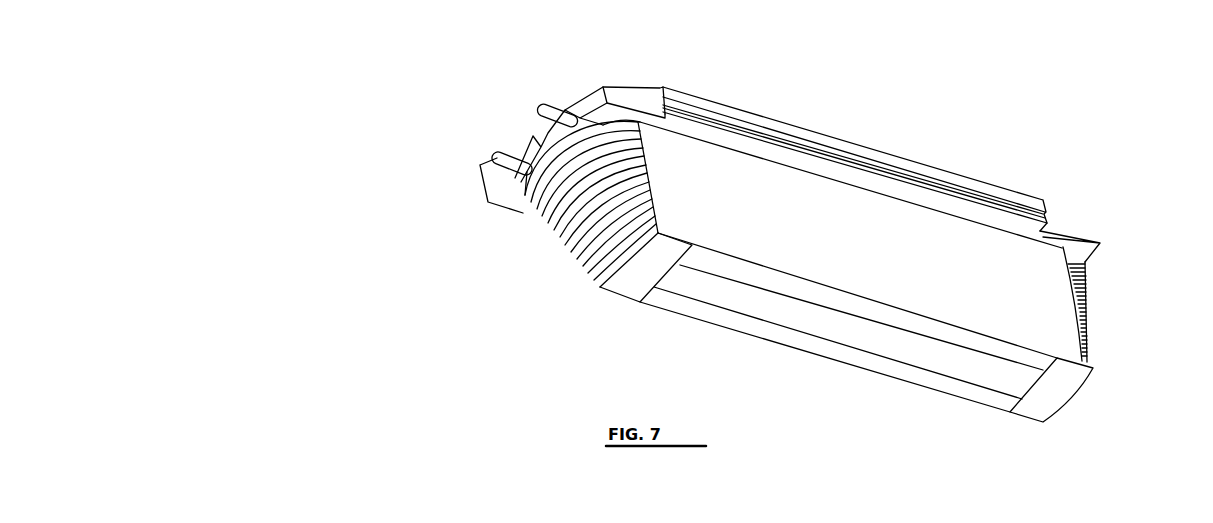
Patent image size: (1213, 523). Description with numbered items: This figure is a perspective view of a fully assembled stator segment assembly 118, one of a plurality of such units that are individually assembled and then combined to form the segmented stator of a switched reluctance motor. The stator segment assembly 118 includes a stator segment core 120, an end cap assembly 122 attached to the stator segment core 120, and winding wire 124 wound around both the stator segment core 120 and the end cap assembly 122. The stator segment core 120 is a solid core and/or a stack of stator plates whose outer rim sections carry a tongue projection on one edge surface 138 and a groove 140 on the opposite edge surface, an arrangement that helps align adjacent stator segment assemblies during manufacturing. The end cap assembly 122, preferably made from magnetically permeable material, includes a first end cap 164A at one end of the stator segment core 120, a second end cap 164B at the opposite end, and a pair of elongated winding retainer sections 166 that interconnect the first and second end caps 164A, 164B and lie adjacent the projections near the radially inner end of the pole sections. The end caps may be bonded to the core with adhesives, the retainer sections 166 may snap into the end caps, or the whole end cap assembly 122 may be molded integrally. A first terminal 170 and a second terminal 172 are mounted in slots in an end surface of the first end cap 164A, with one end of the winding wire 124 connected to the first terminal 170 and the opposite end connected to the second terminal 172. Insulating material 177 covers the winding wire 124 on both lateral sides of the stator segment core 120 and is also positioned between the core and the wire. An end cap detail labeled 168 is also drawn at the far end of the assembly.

The stator segment assembly 118 is at (908, 113).
The stator segment core 120 is at (795, 111).
The end cap assembly 122 is at (583, 73).
The winding wire 124 is at (545, 235).
The edge surface 138 is at (722, 112).
The groove 140 is at (995, 188).
The first end cap 164A is at (622, 98).
The second end cap 164B is at (1077, 233).
The winding retainer sections 166 is at (626, 288).
The end cap 168 is at (1033, 412).
The first terminal 170 is at (481, 167).
The second terminal 172 is at (540, 110).
The insulating material 177 is at (788, 208).